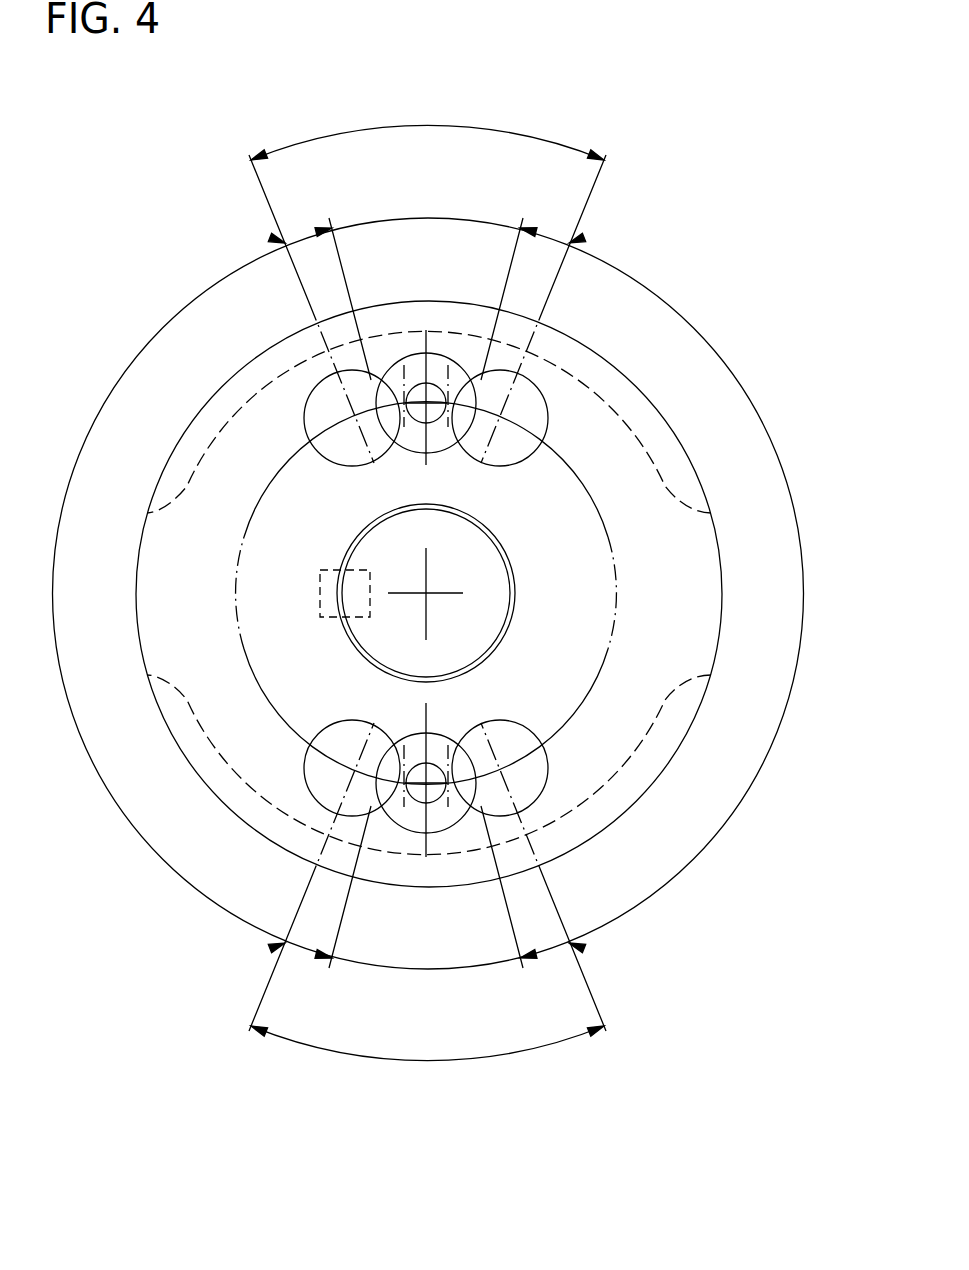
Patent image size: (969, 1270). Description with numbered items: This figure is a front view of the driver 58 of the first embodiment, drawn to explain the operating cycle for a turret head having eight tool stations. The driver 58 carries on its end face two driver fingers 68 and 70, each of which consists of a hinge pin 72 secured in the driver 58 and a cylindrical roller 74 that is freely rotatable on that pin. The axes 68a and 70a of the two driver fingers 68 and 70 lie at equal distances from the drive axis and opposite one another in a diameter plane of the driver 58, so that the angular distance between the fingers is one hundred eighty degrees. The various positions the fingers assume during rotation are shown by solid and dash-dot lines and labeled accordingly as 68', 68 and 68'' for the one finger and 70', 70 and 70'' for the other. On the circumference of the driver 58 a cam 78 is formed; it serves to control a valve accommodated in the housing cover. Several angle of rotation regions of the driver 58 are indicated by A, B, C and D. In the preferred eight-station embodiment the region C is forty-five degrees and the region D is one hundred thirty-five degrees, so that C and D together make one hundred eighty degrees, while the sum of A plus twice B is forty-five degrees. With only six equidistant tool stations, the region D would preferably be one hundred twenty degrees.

The driver 58 is at (126, 616).
The cam 78 is at (203, 437).
The cylindrical roller 74 is at (440, 733).
The driver finger 68 is at (433, 422).
The axis of driver finger 68a is at (409, 396).
The driver finger position 68' is at (344, 450).
The driver finger position 68'' is at (515, 450).
The driver finger 70 is at (424, 822).
The axis of driver finger 70a is at (403, 722).
The driver finger position 70' is at (346, 735).
The driver finger position 70'' is at (522, 735).
The hinge pin 72 is at (437, 795).
The angle of rotation region A is at (428, 218).
The angle of rotation region B is at (305, 232).
The angle of rotation region C is at (438, 128).
The angle of rotation region D is at (52, 598).